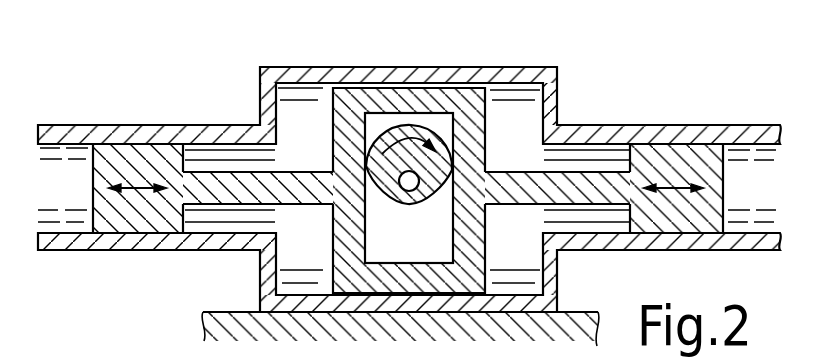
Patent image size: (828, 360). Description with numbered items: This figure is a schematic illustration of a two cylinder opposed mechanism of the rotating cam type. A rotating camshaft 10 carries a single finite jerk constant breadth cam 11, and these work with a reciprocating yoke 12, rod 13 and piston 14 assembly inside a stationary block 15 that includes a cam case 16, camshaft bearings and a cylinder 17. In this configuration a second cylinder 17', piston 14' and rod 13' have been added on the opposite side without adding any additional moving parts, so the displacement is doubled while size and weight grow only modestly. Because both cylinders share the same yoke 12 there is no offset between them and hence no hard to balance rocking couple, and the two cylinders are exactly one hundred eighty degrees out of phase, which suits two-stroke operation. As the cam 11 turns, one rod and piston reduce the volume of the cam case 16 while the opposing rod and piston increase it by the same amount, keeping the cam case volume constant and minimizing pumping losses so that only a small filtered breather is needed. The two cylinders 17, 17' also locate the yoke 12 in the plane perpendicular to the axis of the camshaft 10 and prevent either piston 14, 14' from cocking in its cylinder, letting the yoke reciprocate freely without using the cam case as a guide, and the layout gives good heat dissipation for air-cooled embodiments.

The camshaft 10 is at (409, 193).
The finite jerk constant breadth cam 11 is at (384, 176).
The yoke 12 is at (485, 128).
The rod 13 is at (258, 163).
The rod 13' is at (557, 214).
The piston 14 is at (112, 188).
The piston 14' is at (718, 188).
The stationary block 15 is at (314, 62).
The cam case 16 is at (300, 296).
The cylinder 17 is at (166, 146).
The cylinder 17' is at (594, 219).